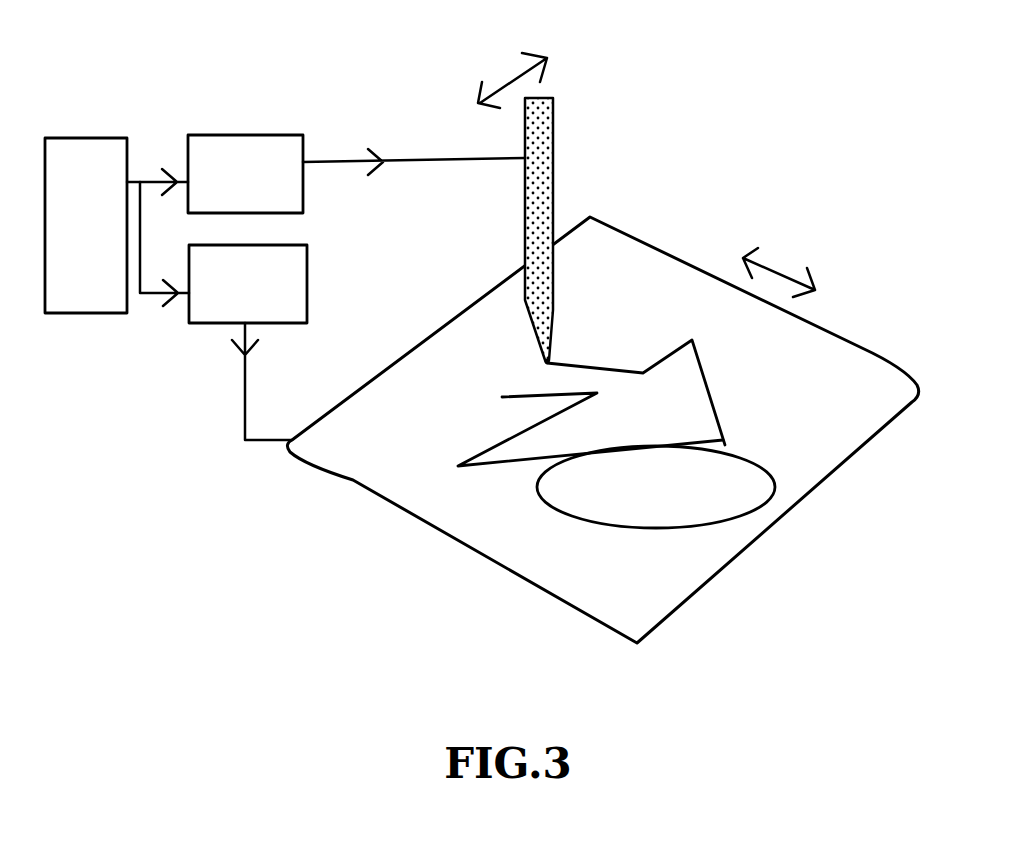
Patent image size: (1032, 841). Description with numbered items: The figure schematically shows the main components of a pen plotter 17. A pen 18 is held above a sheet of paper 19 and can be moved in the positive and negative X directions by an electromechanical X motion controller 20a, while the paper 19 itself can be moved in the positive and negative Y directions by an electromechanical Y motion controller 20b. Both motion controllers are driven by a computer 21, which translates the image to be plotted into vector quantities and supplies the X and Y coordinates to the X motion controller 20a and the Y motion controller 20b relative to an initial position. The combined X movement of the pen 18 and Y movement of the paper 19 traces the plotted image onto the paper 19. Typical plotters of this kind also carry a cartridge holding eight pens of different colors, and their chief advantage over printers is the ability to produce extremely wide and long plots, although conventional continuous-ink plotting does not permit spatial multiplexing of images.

The pen plotter 17 is at (482, 334).
The pen 18 is at (535, 165).
The paper 19 is at (533, 580).
The X motion controller 20a is at (245, 174).
The Y motion controller 20b is at (248, 284).
The computer 21 is at (86, 225).